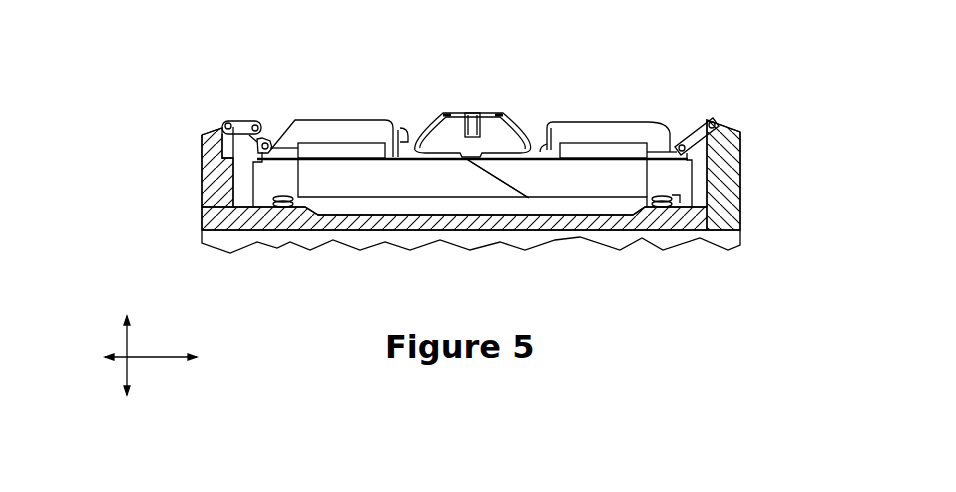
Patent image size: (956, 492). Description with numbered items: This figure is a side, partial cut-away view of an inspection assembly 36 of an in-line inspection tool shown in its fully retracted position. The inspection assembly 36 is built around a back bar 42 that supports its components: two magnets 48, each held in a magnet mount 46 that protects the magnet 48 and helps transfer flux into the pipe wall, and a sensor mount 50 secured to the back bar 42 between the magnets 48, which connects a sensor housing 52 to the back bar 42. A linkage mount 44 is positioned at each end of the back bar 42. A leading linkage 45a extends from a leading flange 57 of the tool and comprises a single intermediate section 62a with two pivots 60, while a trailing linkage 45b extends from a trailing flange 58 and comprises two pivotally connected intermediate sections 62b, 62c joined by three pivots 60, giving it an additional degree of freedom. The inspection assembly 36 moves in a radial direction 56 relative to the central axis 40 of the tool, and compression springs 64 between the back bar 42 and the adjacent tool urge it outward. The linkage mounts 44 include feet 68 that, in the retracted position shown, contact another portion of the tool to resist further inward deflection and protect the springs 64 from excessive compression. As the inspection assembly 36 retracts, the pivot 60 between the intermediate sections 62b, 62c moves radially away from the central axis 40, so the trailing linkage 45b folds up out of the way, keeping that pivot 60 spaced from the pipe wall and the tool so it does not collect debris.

The inspection assembly 36 is at (481, 92).
The central axis 40 is at (168, 379).
The back bar 42 is at (472, 227).
The linkage mount 44 is at (462, 222).
The leading linkage 45a is at (768, 90).
The trailing linkage 45b is at (189, 89).
The magnet mount 46 is at (471, 109).
The magnet 48 is at (497, 109).
The sensor mount 50 is at (495, 109).
The sensor housing 52 is at (511, 81).
The radial direction 56 is at (85, 349).
The leading flange 57 is at (761, 175).
The trailing flange 58 is at (172, 167).
The pivot 60 is at (442, 88).
The intermediate section 62a is at (718, 108).
The intermediate section 62b is at (254, 89).
The intermediate section 62c is at (180, 96).
The compression spring 64 is at (476, 245).
The foot 68 is at (452, 252).